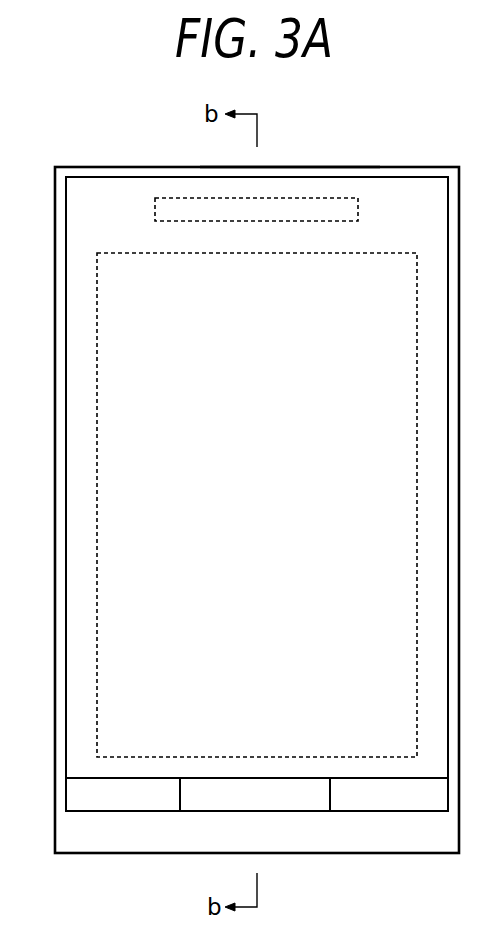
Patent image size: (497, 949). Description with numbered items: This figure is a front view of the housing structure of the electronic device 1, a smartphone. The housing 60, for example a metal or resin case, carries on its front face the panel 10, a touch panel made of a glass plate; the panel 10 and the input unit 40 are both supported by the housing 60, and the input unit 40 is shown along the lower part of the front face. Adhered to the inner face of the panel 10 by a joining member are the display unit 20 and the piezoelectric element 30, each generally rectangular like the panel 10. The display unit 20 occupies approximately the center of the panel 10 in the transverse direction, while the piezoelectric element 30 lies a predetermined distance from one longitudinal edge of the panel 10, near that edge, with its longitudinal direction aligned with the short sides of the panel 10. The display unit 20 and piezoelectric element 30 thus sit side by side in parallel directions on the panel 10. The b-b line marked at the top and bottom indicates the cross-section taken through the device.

The electronic device 1 is at (121, 156).
The panel 10 is at (374, 177).
The display unit 20 is at (375, 253).
The piezoelectric element 30 is at (155, 210).
The input unit 40 is at (79, 800).
The housing 60 is at (293, 167).